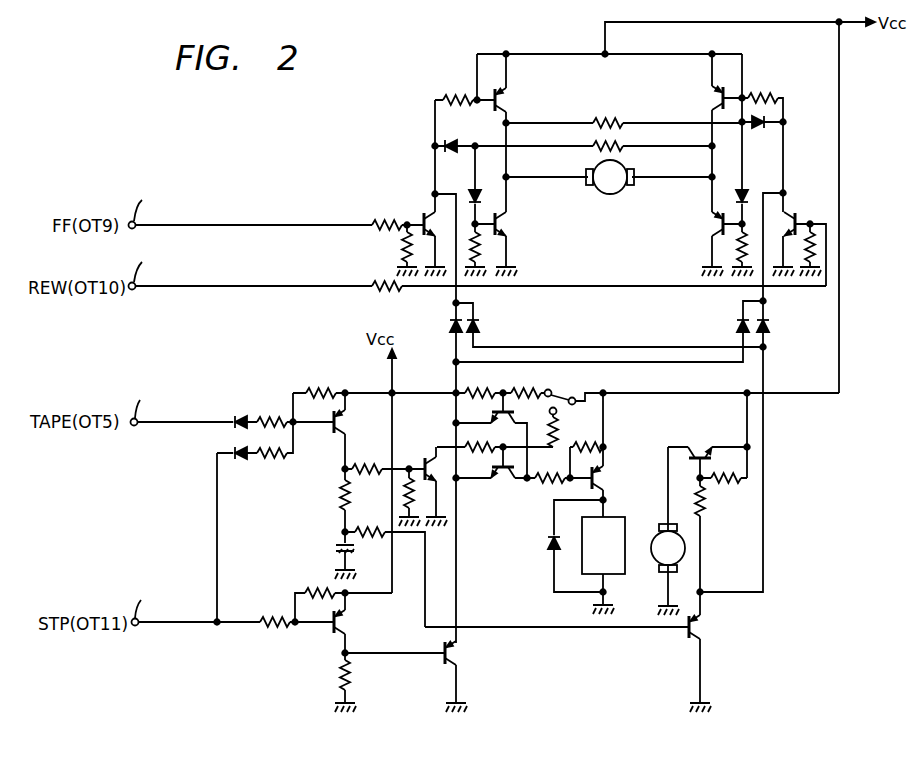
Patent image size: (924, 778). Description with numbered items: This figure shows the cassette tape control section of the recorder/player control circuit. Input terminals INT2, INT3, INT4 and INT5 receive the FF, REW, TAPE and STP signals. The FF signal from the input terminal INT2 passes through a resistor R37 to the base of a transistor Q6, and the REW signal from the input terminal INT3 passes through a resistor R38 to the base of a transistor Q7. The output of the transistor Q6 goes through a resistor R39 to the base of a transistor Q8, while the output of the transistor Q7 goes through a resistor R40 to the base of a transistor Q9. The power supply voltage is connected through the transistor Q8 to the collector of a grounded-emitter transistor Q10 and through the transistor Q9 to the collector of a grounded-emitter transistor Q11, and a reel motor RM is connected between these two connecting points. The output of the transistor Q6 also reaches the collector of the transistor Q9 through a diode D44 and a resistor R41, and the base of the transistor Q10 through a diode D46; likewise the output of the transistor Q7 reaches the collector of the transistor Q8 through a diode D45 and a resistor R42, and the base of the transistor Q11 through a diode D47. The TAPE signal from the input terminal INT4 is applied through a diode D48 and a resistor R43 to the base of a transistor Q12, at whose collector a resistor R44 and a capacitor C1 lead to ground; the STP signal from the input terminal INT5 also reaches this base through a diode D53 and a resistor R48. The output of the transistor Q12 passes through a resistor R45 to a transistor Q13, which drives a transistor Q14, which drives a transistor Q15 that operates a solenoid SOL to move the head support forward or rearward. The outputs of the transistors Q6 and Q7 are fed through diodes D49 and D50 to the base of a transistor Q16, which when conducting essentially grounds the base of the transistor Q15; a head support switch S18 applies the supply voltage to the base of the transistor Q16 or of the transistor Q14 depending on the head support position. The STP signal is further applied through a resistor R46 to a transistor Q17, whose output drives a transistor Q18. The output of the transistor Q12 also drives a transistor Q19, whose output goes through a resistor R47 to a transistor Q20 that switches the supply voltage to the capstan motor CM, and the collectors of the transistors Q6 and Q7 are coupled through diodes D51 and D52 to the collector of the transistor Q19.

The input terminal INT2 is at (157, 207).
The input terminal INT3 is at (157, 268).
The input terminal INT4 is at (152, 402).
The input terminal INT5 is at (155, 603).
The resistor R37 is at (382, 214).
The resistor R38 is at (383, 283).
The resistor R39 is at (453, 90).
The resistor R40 is at (763, 89).
The resistor R41 is at (624, 150).
The resistor R42 is at (606, 112).
The resistor R43 is at (268, 414).
The resistor R44 is at (363, 496).
The resistor R45 is at (366, 459).
The resistor R46 is at (273, 636).
The resistor R47 is at (719, 501).
The resistor R48 is at (265, 460).
The transistor Q6 is at (424, 212).
The transistor Q7 is at (787, 213).
The transistor Q8 is at (513, 100).
The transistor Q9 is at (706, 98).
The transistor Q10 is at (517, 224).
The transistor Q11 is at (706, 224).
The transistor Q12 is at (356, 422).
The transistor Q13 is at (424, 462).
The transistor Q14 is at (505, 484).
The transistor Q15 is at (614, 479).
The transistor Q16 is at (505, 429).
The transistor Q17 is at (357, 623).
The transistor Q18 is at (469, 653).
The transistor Q19 is at (713, 627).
The transistor Q20 is at (700, 442).
The diode D44 is at (458, 135).
The diode D45 is at (768, 127).
The diode D46 is at (483, 198).
The diode D47 is at (748, 196).
The diode D48 is at (240, 415).
The diode D49 is at (451, 321).
The diode D50 is at (724, 326).
The diode D51 is at (492, 326).
The diode D52 is at (781, 329).
The diode D53 is at (241, 459).
The capacitor C1 is at (357, 552).
The head support switch S18 is at (568, 392).
The reel motor RM is at (610, 177).
The capstan motor CM is at (668, 548).
The solenoid SOL is at (603, 545).